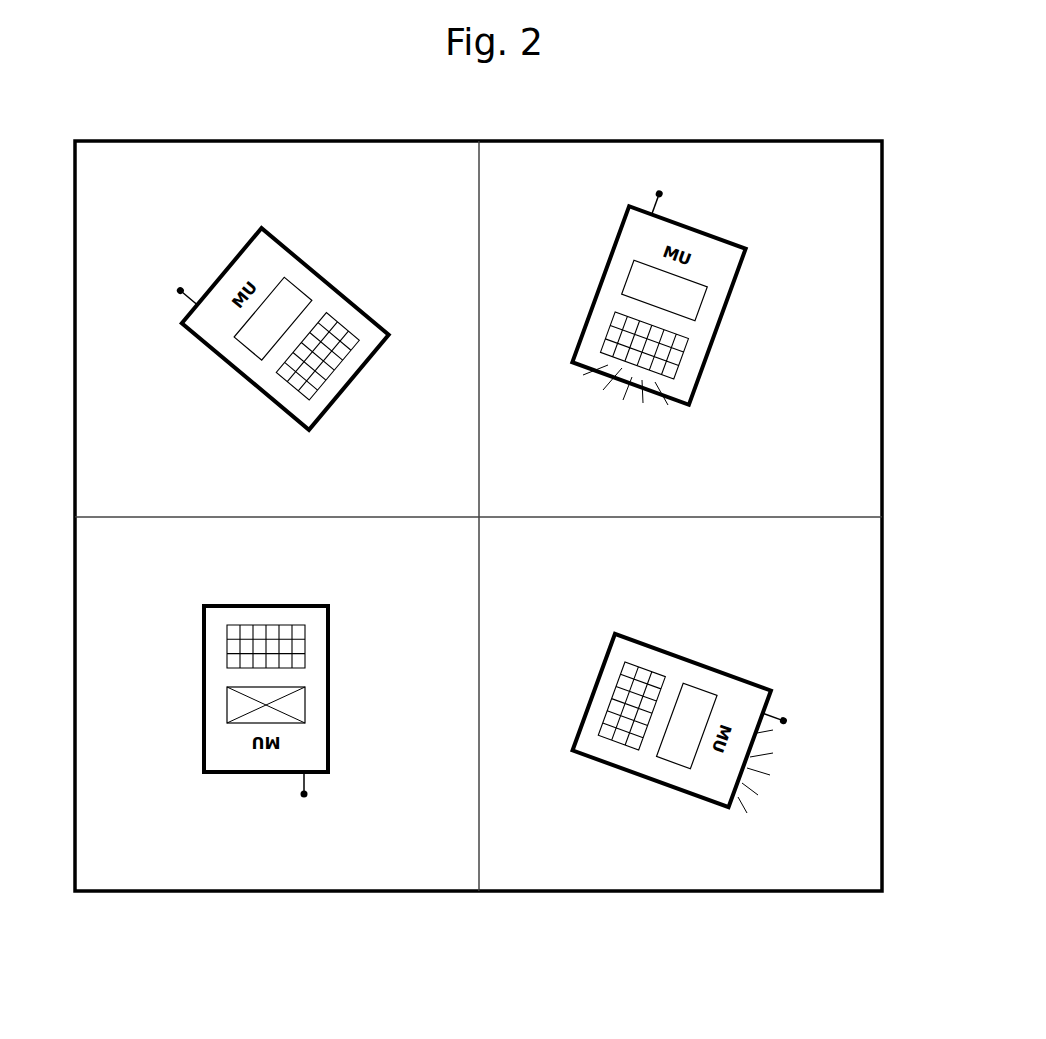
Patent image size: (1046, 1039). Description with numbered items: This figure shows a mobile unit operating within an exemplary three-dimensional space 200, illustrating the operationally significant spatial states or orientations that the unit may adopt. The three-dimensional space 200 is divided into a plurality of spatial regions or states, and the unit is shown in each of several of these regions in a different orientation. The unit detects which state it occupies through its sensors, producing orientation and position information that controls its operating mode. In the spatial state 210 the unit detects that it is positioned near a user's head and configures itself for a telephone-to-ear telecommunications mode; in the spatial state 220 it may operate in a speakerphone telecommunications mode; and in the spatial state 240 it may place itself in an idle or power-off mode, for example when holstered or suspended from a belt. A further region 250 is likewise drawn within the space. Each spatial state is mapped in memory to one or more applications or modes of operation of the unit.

The three-dimensional space 200 is at (703, 97).
The spatial state 210 is at (365, 139).
The spatial state 220 is at (750, 141).
The spatial state 240 is at (312, 892).
The fourth zone / quadrant 250 is at (743, 892).